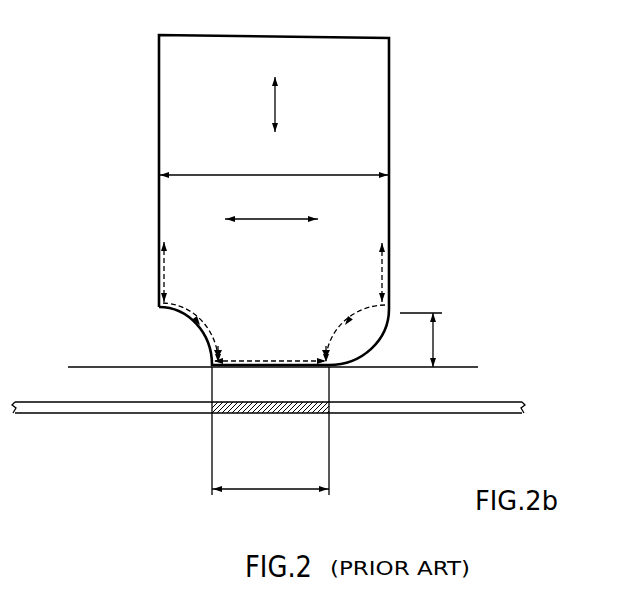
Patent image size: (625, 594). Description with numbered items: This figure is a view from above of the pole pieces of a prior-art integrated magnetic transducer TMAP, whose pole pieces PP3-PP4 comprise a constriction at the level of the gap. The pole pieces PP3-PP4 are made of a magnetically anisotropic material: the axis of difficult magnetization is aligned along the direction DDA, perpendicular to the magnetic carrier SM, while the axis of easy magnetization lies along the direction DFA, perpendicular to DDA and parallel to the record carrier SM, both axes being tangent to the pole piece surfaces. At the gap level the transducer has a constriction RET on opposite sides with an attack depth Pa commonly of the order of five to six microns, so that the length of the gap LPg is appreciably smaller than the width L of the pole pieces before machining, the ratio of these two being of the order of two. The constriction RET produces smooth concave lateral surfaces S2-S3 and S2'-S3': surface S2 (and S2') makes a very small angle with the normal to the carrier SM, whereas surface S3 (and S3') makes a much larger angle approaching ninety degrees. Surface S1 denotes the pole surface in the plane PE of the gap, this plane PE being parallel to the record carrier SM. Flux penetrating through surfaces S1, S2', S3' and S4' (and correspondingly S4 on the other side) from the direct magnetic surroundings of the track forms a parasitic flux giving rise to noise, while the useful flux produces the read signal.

The integrated magnetic transducer TMAP is at (271, 200).
The pole pieces PP3-PP4 is at (386, 103).
The width of the pole pieces L is at (274, 165).
The direction of difficult magnetization DDA is at (296, 104).
The direction of easy magnetization DFA is at (271, 233).
The lateral surface S'4 S4' is at (176, 272).
The lateral surface S4 is at (369, 272).
The concave lateral surface S'3 S3' is at (192, 322).
The concave lateral surface S3 is at (353, 325).
The concave lateral surface S'2 S2' is at (225, 342).
The concave lateral surface S2 is at (318, 345).
The gap-plane surface of the pole pieces S1 is at (270, 350).
The attack depth Pa is at (429, 340).
The constriction RET is at (355, 330).
The plane of the gap PE is at (68, 367).
The magnetic record carrier SM is at (495, 414).
The length of the gap LPg is at (270, 431).